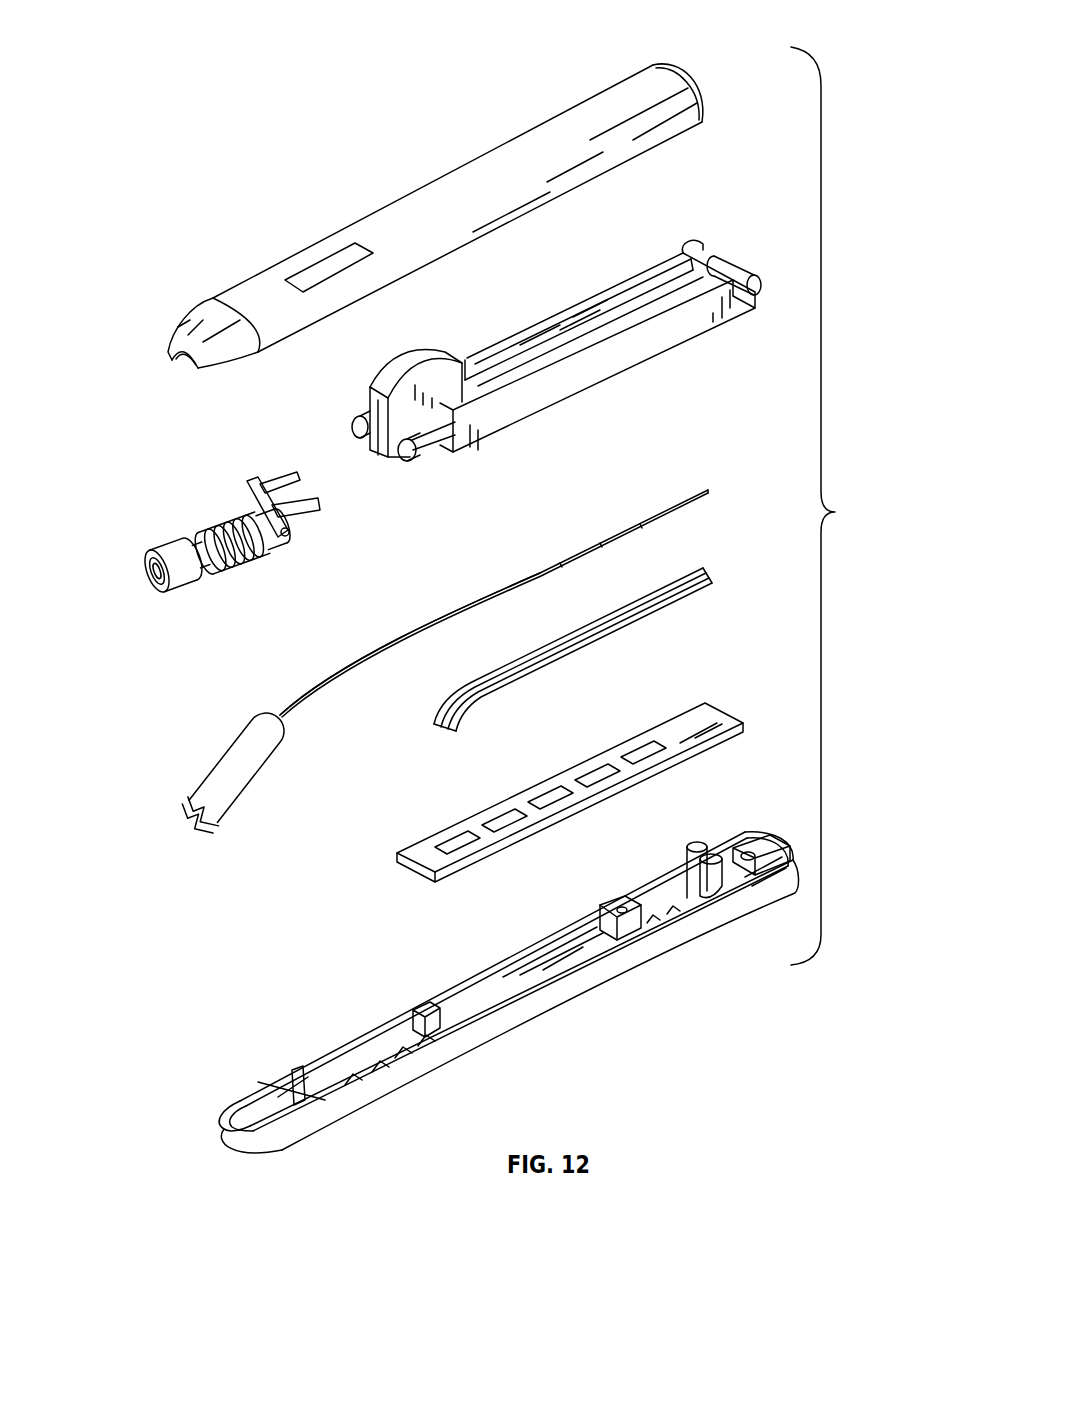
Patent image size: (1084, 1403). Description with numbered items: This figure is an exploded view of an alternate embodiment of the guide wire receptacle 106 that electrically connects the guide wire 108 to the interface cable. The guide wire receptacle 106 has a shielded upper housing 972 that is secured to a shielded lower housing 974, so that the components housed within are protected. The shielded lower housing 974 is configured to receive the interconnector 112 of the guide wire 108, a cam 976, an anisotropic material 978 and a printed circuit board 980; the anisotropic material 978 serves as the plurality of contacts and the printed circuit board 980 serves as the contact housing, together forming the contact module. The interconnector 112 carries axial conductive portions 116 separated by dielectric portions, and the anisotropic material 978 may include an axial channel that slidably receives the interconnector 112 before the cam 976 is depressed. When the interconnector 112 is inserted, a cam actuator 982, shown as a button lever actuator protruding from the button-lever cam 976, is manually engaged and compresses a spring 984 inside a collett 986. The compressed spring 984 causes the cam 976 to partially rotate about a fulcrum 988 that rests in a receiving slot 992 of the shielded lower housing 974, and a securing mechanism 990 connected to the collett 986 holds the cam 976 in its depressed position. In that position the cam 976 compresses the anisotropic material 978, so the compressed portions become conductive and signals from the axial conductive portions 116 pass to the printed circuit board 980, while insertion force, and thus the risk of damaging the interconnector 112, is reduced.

The guide wire receptacle 106 is at (839, 506).
The guide wire 108 is at (258, 770).
The interconnector 112 is at (397, 640).
The axial conductive portions 116 is at (500, 590).
The shielded upper housing 972 is at (262, 283).
The shielded lower housing 974 is at (465, 1050).
The cam 976 is at (640, 280).
The anisotropic material 978 is at (677, 577).
The printed circuit board 980 is at (700, 712).
The cam actuator 982 is at (400, 368).
The spring 984 is at (220, 510).
The collett 986 is at (160, 542).
The fulcrum 988 is at (762, 290).
The securing mechanism 990 is at (250, 483).
The receiving slot 992 is at (637, 927).